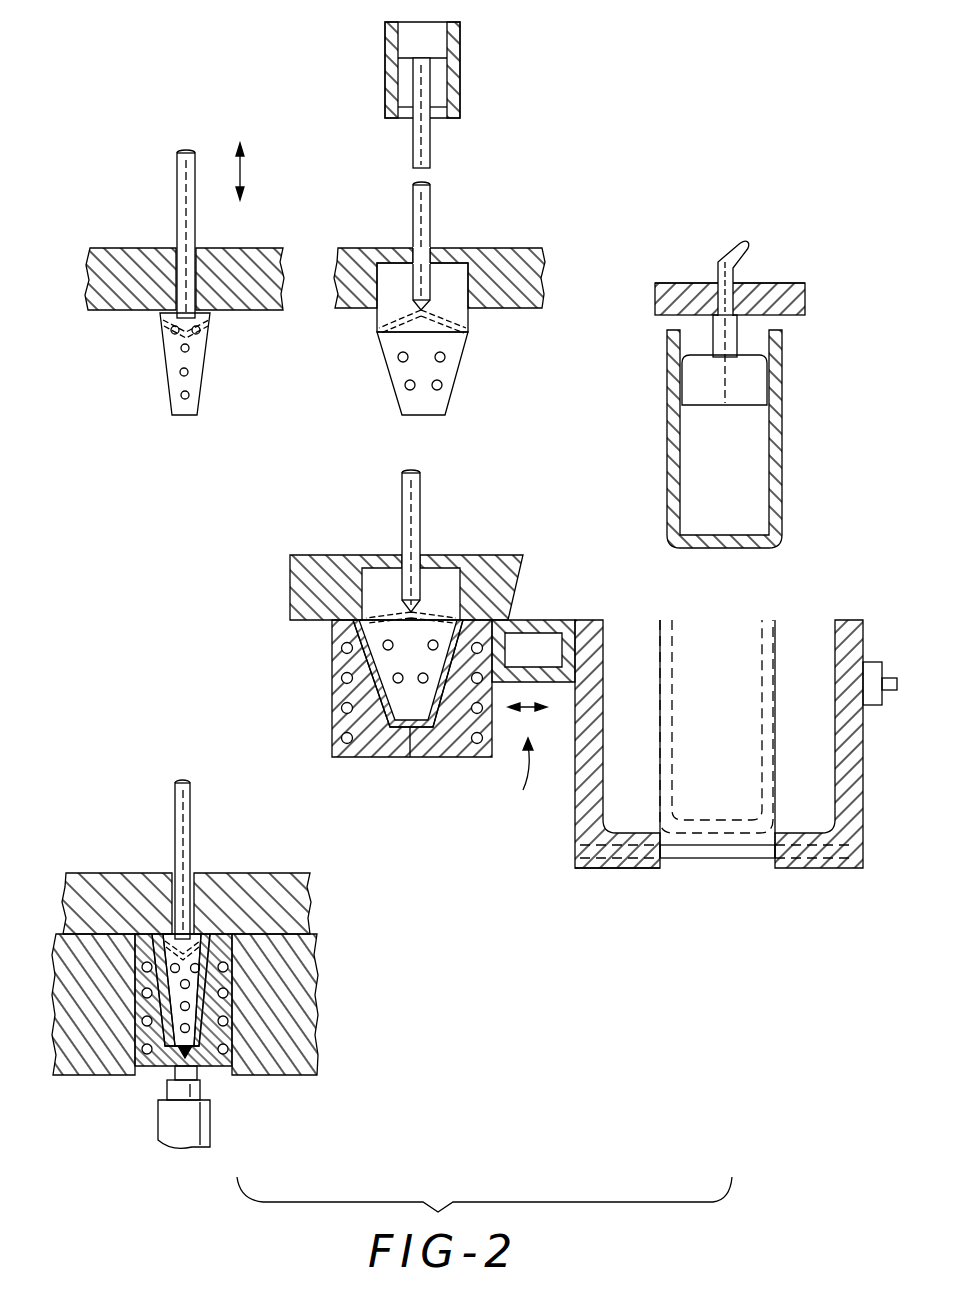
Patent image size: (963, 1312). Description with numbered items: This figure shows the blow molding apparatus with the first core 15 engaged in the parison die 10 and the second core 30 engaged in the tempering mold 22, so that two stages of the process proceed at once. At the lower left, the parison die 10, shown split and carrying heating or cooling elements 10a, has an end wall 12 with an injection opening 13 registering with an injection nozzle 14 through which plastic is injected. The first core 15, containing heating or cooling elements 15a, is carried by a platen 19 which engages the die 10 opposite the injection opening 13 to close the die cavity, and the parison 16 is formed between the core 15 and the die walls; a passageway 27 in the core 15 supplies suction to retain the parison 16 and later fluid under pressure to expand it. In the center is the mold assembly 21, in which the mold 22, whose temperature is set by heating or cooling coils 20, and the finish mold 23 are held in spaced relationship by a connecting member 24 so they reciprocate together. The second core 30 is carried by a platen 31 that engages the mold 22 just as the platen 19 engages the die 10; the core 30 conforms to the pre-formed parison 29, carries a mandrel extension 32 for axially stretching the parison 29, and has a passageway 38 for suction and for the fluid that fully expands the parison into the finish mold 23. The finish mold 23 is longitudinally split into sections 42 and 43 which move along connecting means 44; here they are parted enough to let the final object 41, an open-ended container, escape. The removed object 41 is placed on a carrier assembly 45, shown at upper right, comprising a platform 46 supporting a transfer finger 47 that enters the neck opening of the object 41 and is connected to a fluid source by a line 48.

The parison die 10 is at (240, 1027).
The heating or cooling elements 10a is at (228, 988).
The end wall 12 is at (168, 1052).
The injection opening 13 is at (194, 1054).
The injection nozzle 14 is at (170, 1122).
The first core 15 is at (170, 384).
The heating or cooling elements 15a is at (190, 350).
The parison 16 is at (152, 1012).
The platen 19 is at (118, 880).
The heating or cooling coils 20 is at (341, 678).
The mold assembly 21 is at (528, 781).
The mold 22 is at (460, 748).
The finish mold 23 is at (619, 874).
The connecting member 24 is at (548, 620).
The passageway 27 is at (178, 198).
The pre-formed parison 29 is at (462, 620).
The second core 30 is at (392, 385).
The platen 31 is at (520, 248).
The mandrel extension 32 is at (422, 492).
The passageway 38 is at (406, 514).
The final object 41 is at (672, 470).
The finish mold section 42 is at (825, 870).
The finish mold section 43 is at (582, 845).
The connecting means 44 is at (722, 858).
The carrier assembly 45 is at (764, 280).
The platform 46 is at (805, 300).
The transfer finger 47 is at (690, 382).
The line 48 is at (727, 258).